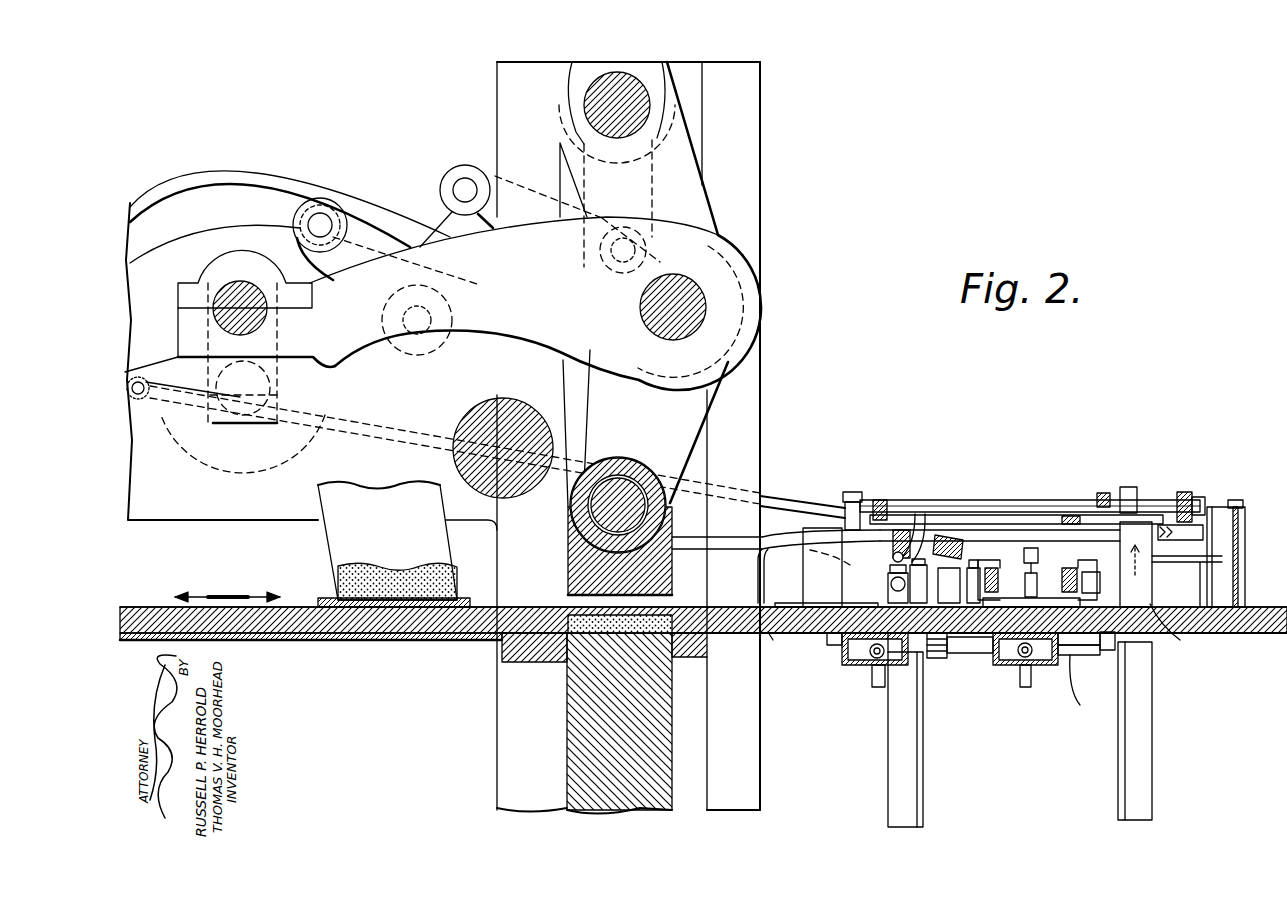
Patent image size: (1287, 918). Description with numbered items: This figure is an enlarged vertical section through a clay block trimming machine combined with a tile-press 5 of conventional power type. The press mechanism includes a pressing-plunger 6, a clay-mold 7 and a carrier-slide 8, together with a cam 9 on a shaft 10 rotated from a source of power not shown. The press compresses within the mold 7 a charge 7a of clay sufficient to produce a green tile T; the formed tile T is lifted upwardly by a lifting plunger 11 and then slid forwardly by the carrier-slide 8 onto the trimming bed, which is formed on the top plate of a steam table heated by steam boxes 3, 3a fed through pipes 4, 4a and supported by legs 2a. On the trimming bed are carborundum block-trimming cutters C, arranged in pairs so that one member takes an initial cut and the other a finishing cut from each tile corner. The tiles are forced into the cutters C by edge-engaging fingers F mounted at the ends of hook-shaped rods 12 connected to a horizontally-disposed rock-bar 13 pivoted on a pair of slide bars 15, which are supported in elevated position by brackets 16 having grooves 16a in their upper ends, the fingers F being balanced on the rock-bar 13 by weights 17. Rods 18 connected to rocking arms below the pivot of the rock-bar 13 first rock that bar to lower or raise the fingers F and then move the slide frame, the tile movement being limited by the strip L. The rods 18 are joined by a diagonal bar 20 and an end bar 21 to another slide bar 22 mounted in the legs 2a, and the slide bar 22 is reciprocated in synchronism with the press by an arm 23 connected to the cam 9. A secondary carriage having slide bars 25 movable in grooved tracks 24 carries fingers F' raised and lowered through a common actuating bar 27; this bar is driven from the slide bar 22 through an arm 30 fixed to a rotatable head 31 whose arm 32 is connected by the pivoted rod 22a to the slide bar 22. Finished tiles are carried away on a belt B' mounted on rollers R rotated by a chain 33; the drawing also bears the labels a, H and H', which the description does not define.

The legs 2a is at (905, 710).
The steam box 3 is at (842, 653).
The steam box 3a is at (1000, 658).
The steam pipe 4 is at (877, 673).
The steam pipe 4a is at (1025, 678).
The tile-press 5 is at (745, 383).
The pressing-plunger 6 is at (566, 568).
The clay-mold 7 is at (515, 640).
The charge of clay 7a is at (648, 613).
The carrier-slide 8 is at (320, 643).
The cam 9 is at (300, 185).
The shaft 10 is at (288, 378).
The lifting plunger 11 is at (577, 723).
The hook-shaped rod 12 is at (822, 537).
The rock-bar 13 is at (893, 528).
The slide bar 15 is at (742, 543).
The bracket 16 is at (812, 582).
The groove 16a is at (840, 577).
The weight 17 is at (957, 540).
The rod 18 is at (1070, 504).
The diagonal bar 20 is at (1047, 520).
The end bar 21 is at (1177, 492).
The slide bar 22 is at (1207, 533).
The pivoted rod 22a is at (938, 490).
The arm 23 is at (762, 488).
The grooved track 24 is at (993, 573).
The slide bar 25 is at (1003, 567).
The actuating bar 27 is at (1040, 573).
The arm 30 is at (1187, 574).
The rotatable head 31 is at (1238, 560).
The arm 32 is at (1205, 512).
The chain 33 is at (933, 658).
The direction arrow a is at (1139, 562).
The belt B' is at (1067, 694).
The block-trimming cutter C is at (847, 662).
The edge-engaging finger F is at (773, 576).
The edge-engaging finger F' is at (1079, 668).
The holder H is at (1026, 584).
The holder H' is at (891, 581).
The strip L is at (1174, 629).
The roller R is at (1100, 655).
The green tile T is at (777, 647).